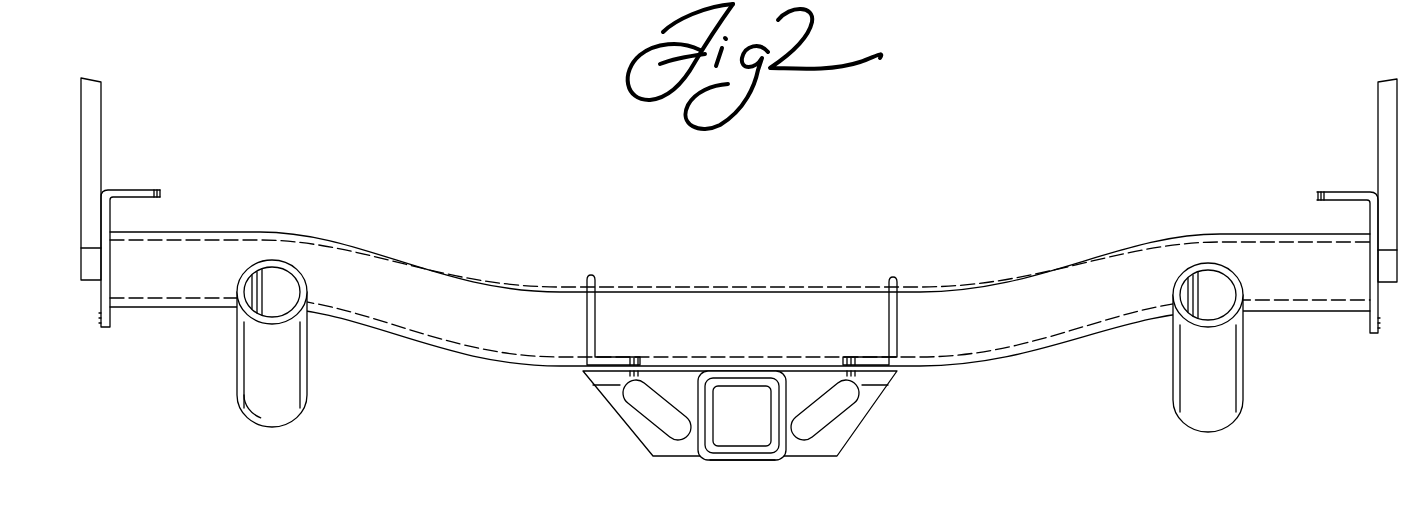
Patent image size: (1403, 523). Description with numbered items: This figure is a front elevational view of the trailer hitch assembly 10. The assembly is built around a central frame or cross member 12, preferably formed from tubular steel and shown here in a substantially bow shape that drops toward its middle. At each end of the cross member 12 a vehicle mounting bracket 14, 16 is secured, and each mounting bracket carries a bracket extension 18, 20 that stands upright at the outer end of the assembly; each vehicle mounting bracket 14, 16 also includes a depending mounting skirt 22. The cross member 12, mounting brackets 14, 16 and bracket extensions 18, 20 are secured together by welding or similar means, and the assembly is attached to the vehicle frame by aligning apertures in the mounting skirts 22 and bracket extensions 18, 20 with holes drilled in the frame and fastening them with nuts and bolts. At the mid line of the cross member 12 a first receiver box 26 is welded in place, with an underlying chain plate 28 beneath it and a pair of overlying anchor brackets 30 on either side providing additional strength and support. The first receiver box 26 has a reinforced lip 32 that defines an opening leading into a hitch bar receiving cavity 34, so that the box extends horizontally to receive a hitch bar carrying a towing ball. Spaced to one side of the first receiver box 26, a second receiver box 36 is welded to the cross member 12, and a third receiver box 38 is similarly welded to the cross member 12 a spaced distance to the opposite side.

The trailer hitch assembly 10 is at (1043, 137).
The cross member 12 is at (687, 291).
The vehicle mounting bracket 14 is at (108, 308).
The vehicle mounting bracket 16 is at (1370, 222).
The bracket extension 18 is at (92, 148).
The bracket extension 20 is at (1384, 120).
The mounting skirt 22 is at (150, 190).
The first receiver box 26 is at (737, 447).
The chain plate 28 is at (860, 410).
The anchor bracket 30 is at (590, 276).
The reinforced lip 32 is at (757, 463).
The hitch bar receiving cavity 34 is at (741, 429).
The second receiver box 36 is at (303, 382).
The third receiver box 38 is at (1228, 382).